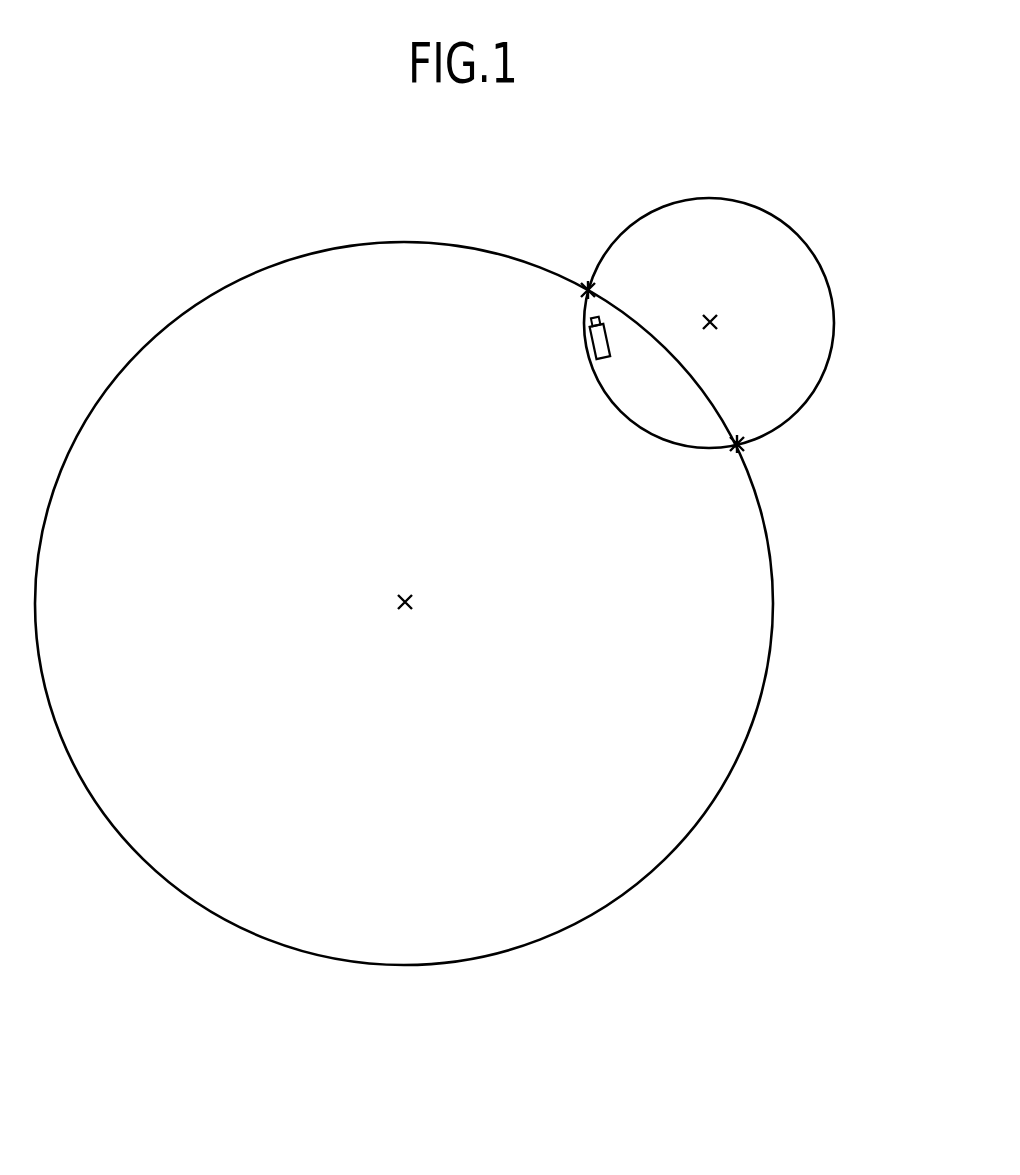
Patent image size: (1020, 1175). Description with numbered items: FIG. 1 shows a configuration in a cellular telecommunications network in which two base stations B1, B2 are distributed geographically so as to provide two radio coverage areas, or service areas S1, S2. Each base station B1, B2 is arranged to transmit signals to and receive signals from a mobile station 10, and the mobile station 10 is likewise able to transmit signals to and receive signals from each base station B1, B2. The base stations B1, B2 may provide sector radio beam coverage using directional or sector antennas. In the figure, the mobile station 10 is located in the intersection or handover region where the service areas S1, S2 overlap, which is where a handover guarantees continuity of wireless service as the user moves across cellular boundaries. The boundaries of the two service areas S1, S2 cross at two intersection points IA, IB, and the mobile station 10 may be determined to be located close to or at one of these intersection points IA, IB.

The mobile station 10 is at (604, 322).
The service area S1 is at (772, 542).
The service area S2 is at (836, 346).
The base station B1 is at (429, 605).
The base station B2 is at (732, 303).
The intersection point IA is at (576, 268).
The intersection point IB is at (760, 461).